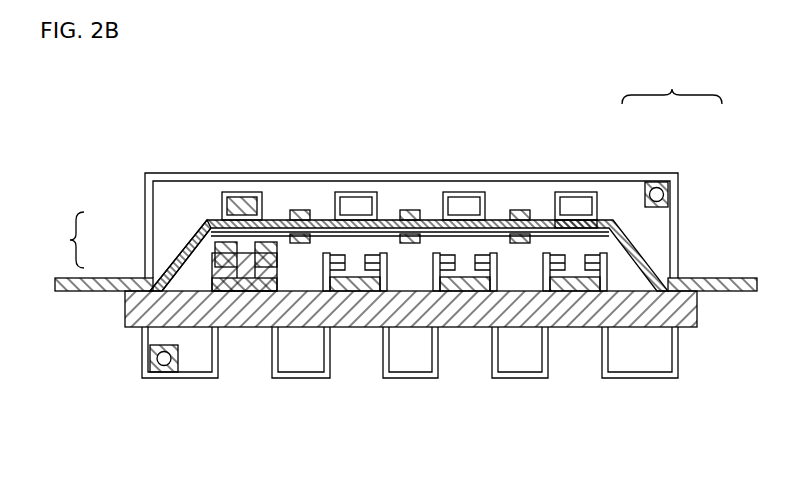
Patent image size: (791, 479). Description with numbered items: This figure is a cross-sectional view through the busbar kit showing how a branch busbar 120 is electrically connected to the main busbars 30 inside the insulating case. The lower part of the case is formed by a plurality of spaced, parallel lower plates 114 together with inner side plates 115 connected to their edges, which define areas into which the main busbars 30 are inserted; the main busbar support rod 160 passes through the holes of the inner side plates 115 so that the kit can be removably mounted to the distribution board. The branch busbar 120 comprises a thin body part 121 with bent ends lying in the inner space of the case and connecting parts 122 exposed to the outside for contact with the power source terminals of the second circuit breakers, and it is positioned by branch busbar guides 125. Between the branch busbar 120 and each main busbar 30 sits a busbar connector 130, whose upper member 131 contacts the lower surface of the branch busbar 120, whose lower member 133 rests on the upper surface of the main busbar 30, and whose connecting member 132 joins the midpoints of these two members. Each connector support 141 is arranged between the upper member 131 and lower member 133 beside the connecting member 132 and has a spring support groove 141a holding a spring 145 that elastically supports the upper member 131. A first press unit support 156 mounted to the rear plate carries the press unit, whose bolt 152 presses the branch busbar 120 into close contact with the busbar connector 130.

The main busbar 30 is at (235, 291).
The lower plate 114 is at (641, 372).
The inner side plate 115 is at (383, 253).
The branch busbar 120 is at (672, 88).
The body part 121 is at (632, 175).
The connecting part 122 is at (722, 278).
The branch busbar guide 125 is at (300, 210).
The busbar connector 130 is at (60, 240).
The upper member 131 is at (207, 222).
The connecting member 132 is at (187, 228).
The lower member 133 is at (213, 258).
The connector support 141 is at (347, 192).
The spring support groove 141a is at (553, 222).
The spring 145 is at (343, 253).
The bolt 152 is at (247, 197).
The first press unit support 156 is at (225, 190).
The main busbar support rod 160 is at (463, 300).